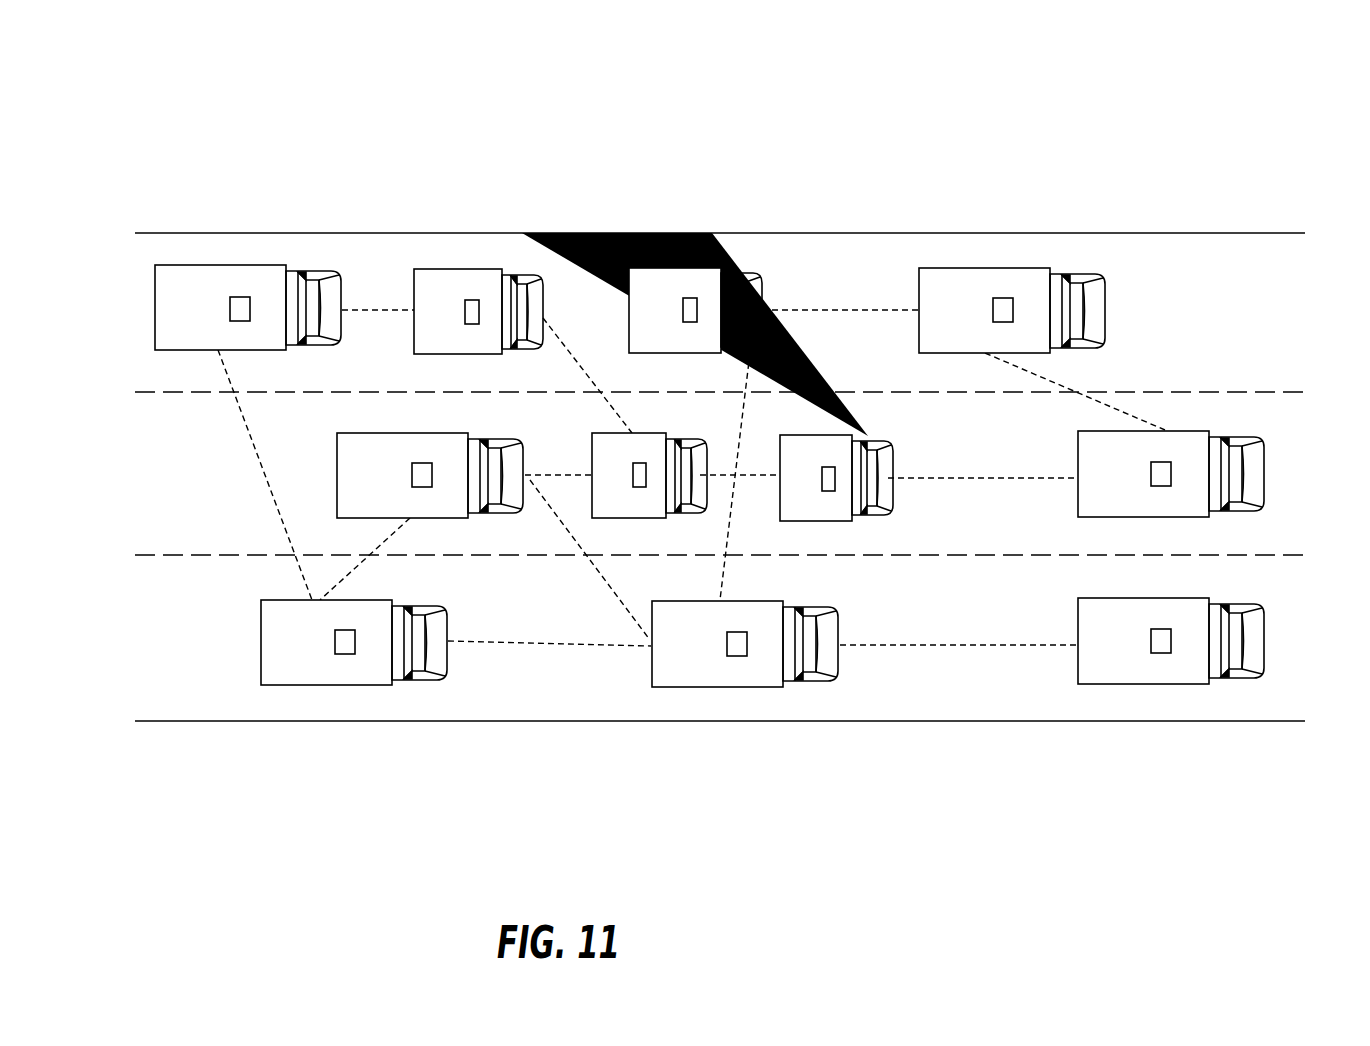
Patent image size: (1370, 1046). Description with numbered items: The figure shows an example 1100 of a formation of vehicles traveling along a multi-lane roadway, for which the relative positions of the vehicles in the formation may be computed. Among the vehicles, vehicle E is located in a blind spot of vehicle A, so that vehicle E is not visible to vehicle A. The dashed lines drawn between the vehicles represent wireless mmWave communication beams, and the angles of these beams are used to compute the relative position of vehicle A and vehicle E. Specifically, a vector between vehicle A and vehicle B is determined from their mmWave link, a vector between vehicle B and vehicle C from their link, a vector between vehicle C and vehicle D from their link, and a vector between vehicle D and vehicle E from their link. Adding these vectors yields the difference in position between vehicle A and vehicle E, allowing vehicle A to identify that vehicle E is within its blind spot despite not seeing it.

The example formation of vehicles 1100 is at (243, 80).
The vehicle A is at (836, 478).
The vehicle B is at (649, 475).
The vehicle C is at (430, 475).
The vehicle D is at (745, 644).
The vehicle E is at (695, 310).